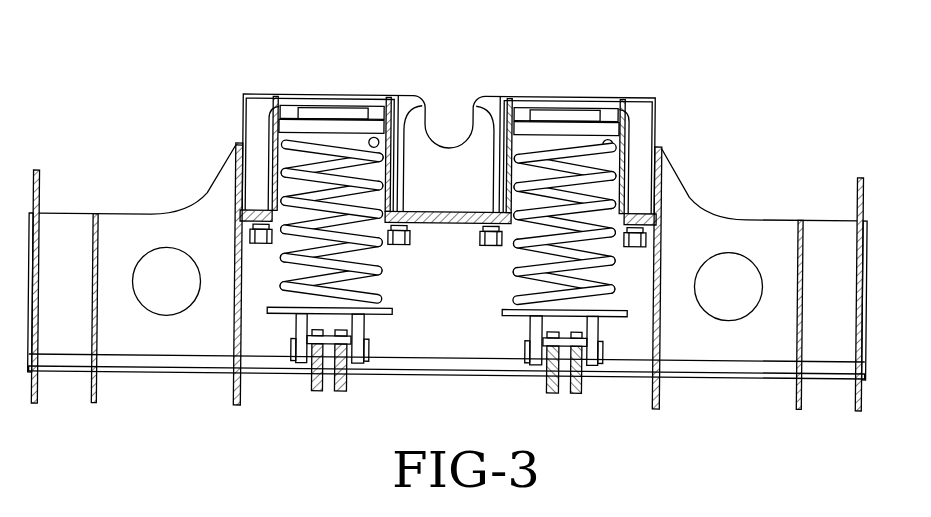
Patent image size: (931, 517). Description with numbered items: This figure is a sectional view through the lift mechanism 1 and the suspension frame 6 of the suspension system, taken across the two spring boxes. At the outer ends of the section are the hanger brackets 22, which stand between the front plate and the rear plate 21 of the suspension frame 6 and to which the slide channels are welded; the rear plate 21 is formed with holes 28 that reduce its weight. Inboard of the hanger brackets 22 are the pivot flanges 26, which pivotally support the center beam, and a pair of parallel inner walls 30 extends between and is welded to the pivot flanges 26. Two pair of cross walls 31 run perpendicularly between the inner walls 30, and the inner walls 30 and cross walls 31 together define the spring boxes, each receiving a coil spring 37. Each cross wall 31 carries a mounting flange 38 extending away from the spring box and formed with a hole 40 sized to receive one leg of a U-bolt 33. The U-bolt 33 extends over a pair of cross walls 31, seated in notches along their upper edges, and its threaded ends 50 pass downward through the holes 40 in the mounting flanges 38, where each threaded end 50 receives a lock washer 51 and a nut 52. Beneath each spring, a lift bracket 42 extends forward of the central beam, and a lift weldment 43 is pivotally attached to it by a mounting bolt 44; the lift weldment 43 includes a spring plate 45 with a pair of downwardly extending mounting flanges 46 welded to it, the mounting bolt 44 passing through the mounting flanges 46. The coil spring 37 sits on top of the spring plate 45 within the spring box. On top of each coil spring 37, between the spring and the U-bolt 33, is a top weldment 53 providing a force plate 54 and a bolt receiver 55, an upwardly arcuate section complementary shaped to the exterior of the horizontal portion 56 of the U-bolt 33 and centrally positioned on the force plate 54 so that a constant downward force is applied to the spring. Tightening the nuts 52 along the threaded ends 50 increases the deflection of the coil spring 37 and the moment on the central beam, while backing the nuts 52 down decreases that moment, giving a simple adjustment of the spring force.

The lift mechanism 1 is at (282, 160).
The suspension frame 6 is at (692, 165).
The rear plate 21 is at (128, 226).
The hanger bracket 22 is at (42, 175).
The pivot flange 26 is at (236, 385).
The hole 28 is at (180, 306).
The inner wall 30 is at (452, 148).
The cross wall 31 is at (268, 110).
The U-bolt 33 is at (265, 122).
The coil spring 37 is at (517, 270).
The mounting flange 38 is at (460, 213).
The hole 40 is at (244, 210).
The lift bracket 42 is at (320, 393).
The lift weldment 43 is at (367, 321).
The mounting bolt 44 is at (372, 358).
The spring plate 45 is at (284, 316).
The mounting flange 46 is at (302, 362).
The threaded end 50 is at (262, 246).
The lock washer 51 is at (250, 231).
The nut 52 is at (255, 240).
The top weldment 53 is at (348, 110).
The force plate 54 is at (372, 128).
The bolt receiver 55 is at (316, 112).
The horizontal portion 56 is at (292, 107).